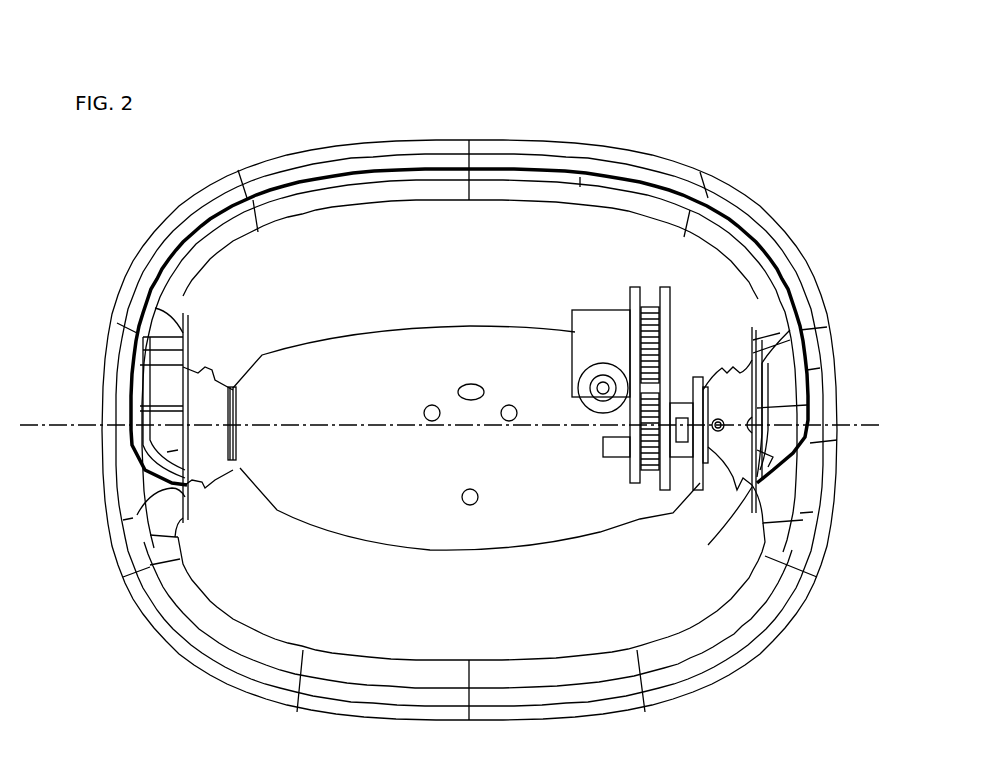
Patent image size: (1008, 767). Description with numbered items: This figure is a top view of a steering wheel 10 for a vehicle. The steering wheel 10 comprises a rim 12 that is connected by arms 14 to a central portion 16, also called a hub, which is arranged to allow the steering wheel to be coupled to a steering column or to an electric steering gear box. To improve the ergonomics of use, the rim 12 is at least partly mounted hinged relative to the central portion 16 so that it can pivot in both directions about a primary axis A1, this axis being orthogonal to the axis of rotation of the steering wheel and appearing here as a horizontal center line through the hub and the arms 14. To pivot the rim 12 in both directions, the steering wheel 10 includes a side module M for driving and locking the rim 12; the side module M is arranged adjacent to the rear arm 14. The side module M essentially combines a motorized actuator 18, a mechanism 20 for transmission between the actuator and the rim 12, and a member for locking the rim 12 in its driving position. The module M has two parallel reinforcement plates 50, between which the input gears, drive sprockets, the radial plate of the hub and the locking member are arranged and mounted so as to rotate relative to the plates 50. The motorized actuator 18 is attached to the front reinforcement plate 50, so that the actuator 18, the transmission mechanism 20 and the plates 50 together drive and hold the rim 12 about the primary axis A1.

The steering wheel 10 is at (637, 112).
The rim 12 is at (417, 150).
The arms 14 is at (202, 372).
The central portion 16 is at (345, 347).
The motorized actuator 18 is at (585, 363).
The transmission mechanism 20 is at (650, 278).
The reinforcement plates 50 is at (660, 490).
The side module M is at (687, 313).
The primary axis A1 is at (267, 430).